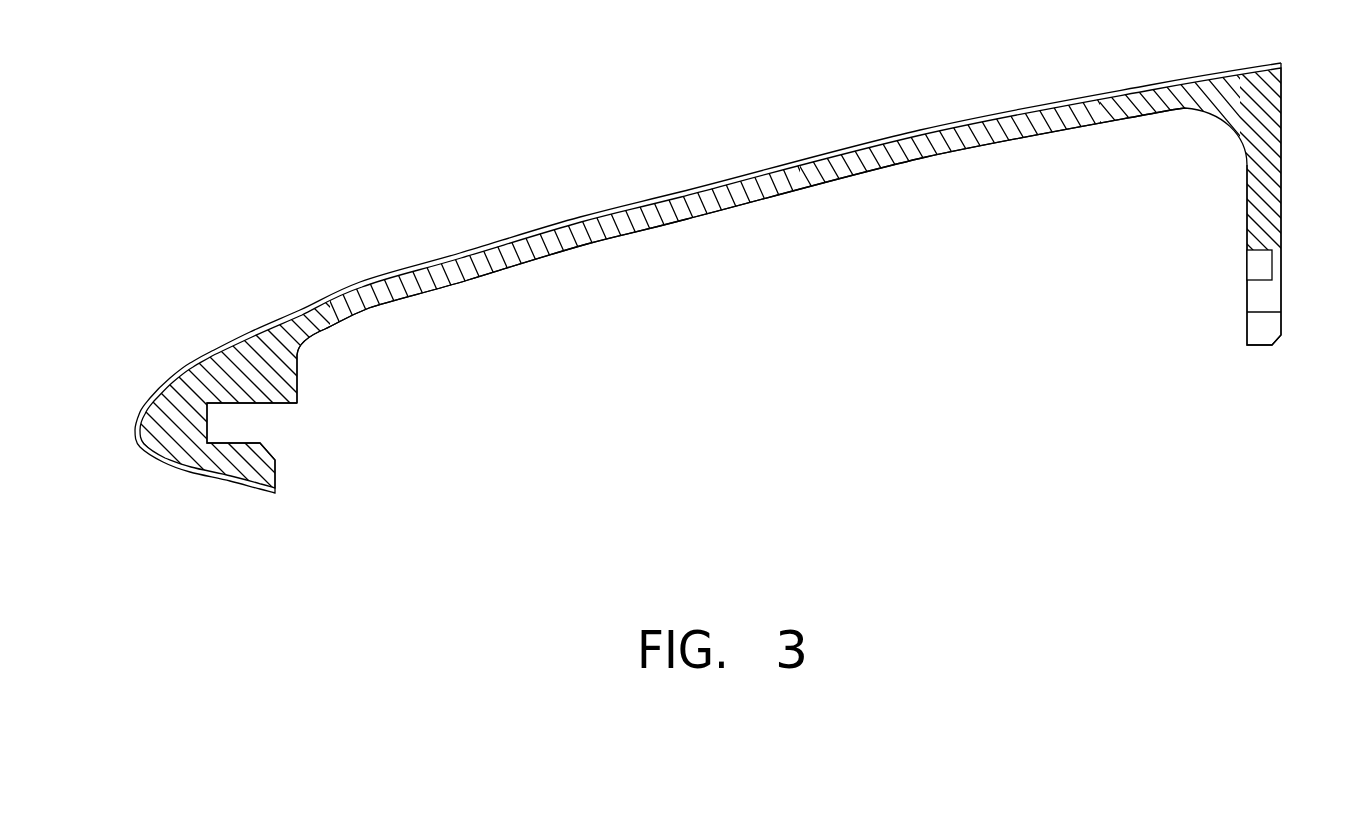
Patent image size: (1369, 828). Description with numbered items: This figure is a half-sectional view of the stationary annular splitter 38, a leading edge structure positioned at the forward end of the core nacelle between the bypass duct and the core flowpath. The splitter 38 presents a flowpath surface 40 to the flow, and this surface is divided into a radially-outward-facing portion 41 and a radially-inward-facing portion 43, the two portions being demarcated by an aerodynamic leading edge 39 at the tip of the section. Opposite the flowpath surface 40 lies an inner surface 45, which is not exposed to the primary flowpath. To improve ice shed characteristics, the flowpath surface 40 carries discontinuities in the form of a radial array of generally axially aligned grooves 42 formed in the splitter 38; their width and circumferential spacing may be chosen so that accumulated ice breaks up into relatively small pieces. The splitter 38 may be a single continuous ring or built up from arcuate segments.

The splitter 38 is at (1265, 176).
The aerodynamic leading edge 39 is at (134, 431).
The flowpath surface 40 is at (786, 163).
The radially-outward-facing portion 41 is at (462, 258).
The grooves 42 is at (303, 310).
The radially-inward-facing portion 43 is at (252, 484).
The inner surface 45 is at (763, 201).